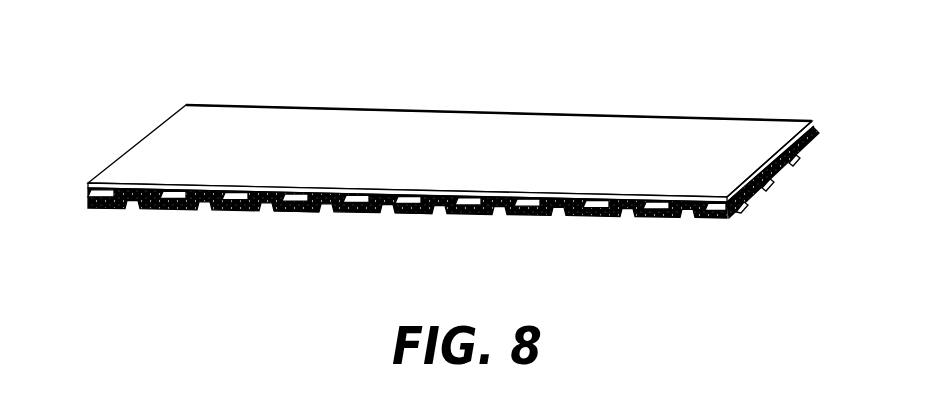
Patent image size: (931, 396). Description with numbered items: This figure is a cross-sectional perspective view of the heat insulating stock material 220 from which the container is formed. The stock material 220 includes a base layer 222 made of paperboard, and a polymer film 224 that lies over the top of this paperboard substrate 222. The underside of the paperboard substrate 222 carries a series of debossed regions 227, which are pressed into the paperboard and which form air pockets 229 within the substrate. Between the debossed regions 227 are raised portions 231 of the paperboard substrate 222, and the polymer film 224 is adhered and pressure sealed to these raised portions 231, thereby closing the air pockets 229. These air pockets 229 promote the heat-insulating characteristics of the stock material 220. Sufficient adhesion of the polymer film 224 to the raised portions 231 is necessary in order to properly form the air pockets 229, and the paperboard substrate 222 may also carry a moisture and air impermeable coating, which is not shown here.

The heat insulating stock material 220 is at (313, 84).
The polymer film 224 is at (714, 131).
The base layer 222 is at (512, 213).
The debossed regions 227 is at (742, 201).
The air pockets 229 is at (652, 208).
The raised portions 231 is at (305, 211).